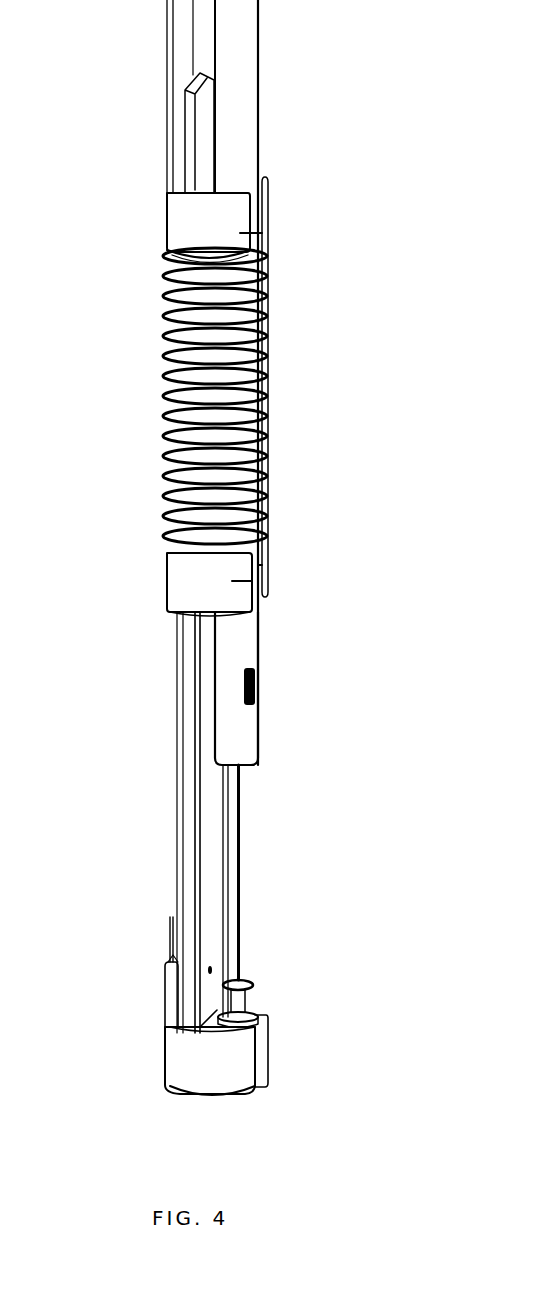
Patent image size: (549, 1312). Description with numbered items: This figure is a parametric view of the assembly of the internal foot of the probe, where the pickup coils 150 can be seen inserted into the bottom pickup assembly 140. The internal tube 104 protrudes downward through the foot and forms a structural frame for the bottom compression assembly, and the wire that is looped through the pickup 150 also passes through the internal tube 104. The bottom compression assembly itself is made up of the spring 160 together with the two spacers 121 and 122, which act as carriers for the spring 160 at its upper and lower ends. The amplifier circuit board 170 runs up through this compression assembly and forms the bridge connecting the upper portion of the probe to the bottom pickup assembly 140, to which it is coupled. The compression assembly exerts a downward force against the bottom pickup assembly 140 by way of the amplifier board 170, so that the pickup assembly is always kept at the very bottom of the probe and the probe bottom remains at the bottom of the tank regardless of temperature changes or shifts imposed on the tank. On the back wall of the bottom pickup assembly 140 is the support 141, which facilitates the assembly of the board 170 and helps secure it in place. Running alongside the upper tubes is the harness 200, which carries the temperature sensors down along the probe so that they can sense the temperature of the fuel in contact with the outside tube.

The harness 200 is at (157, 42).
The carrier 121 is at (168, 221).
The spring 160 is at (163, 412).
The carrier 122 is at (235, 590).
The amplifier circuit board 170 is at (185, 749).
The internal tube 104 is at (250, 740).
The pickup coils 150 is at (246, 985).
The support 141 is at (157, 992).
The bottom pickup assembly 140 is at (200, 1060).